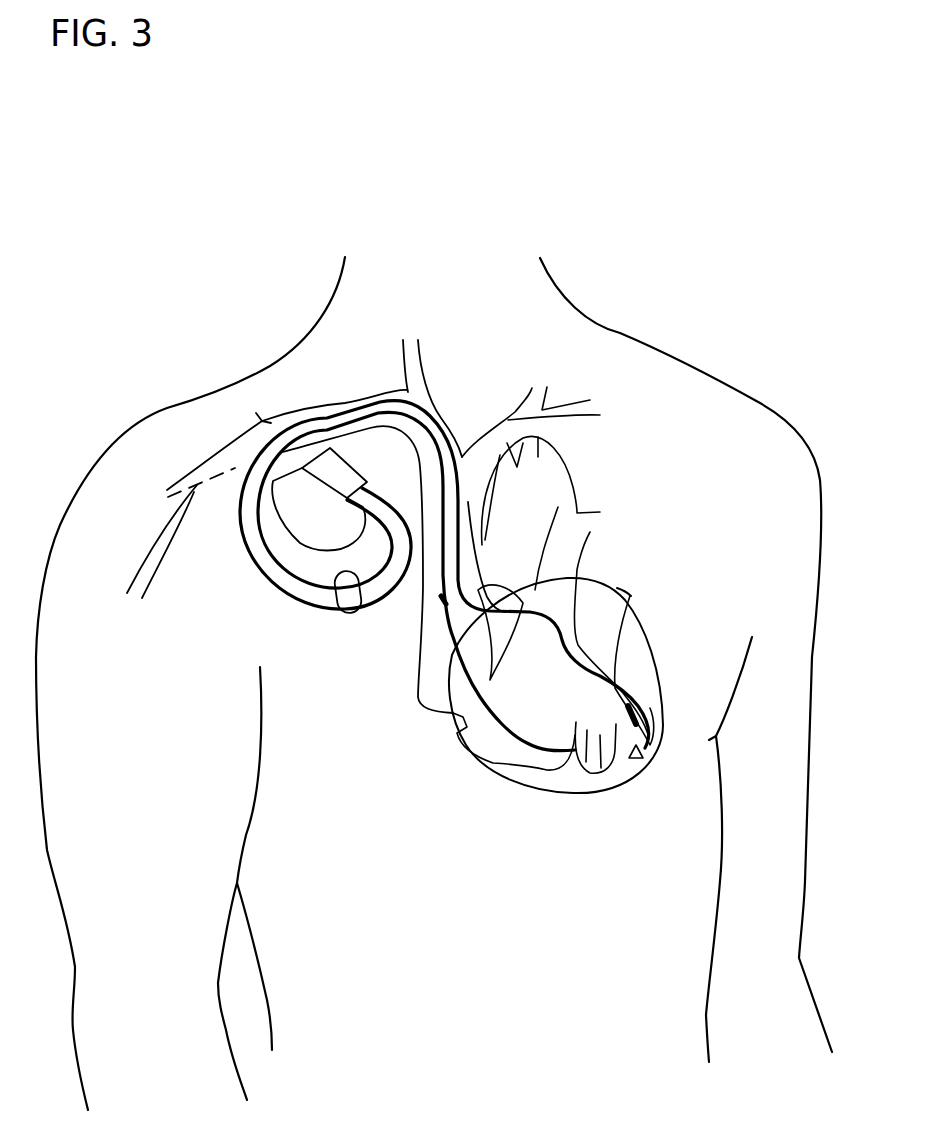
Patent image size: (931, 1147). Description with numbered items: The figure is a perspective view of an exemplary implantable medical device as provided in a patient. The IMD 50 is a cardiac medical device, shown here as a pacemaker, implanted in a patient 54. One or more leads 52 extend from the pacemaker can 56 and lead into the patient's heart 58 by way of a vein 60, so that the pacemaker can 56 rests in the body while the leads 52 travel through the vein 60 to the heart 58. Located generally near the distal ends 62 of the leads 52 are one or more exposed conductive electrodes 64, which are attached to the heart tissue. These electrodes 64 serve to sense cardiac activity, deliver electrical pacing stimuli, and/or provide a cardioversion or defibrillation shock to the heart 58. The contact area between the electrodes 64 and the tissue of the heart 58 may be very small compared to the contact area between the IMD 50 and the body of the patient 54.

The IMD 50 is at (374, 471).
The leads 52 is at (353, 610).
The patient 54 is at (692, 367).
The pacemaker can 56 is at (300, 543).
The heart 58 is at (572, 796).
The vein 60 is at (230, 450).
The distal ends 62 is at (647, 659).
The electrodes 64 is at (650, 707).